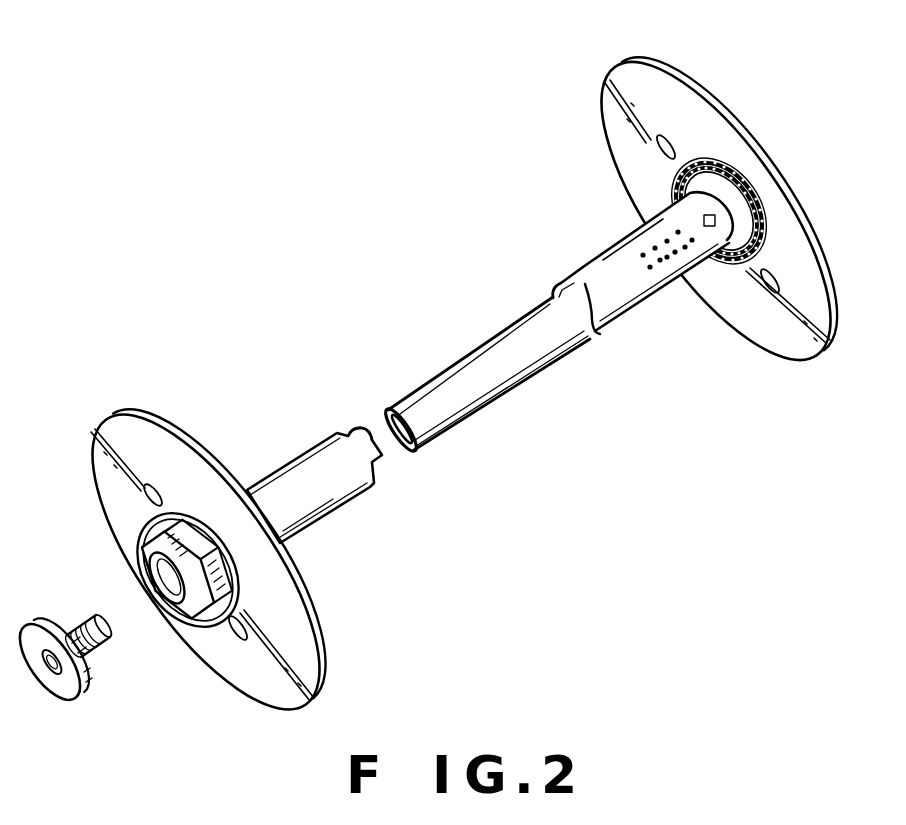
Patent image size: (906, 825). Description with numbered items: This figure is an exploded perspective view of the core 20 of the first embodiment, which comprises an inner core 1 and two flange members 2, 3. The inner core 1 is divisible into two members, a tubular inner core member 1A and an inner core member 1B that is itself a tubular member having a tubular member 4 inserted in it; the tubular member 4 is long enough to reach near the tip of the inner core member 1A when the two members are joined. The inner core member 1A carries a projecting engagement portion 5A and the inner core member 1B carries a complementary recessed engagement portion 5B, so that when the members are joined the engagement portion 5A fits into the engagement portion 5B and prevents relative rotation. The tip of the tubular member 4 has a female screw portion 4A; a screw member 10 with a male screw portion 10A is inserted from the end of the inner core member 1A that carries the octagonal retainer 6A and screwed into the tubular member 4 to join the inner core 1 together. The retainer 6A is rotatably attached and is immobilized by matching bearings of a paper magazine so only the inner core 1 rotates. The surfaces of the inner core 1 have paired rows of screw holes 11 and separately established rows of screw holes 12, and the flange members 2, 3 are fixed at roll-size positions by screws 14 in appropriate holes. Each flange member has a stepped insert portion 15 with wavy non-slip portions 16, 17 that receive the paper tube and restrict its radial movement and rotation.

The inner core 1 is at (490, 362).
The inner core member 1A is at (314, 466).
The inner core member 1B is at (649, 264).
The flange member 2 is at (140, 420).
The flange member 3 is at (626, 72).
The tubular member 4 is at (485, 394).
The female screw portion 4A is at (413, 452).
The engagement portion 5A is at (363, 433).
The engagement portion 5B is at (563, 282).
The retainer 6A is at (152, 516).
The screw member 10 is at (72, 692).
The male screw portion 10A is at (108, 652).
The screw holes 11 is at (667, 272).
The screw holes 12 is at (647, 237).
The screws 14 is at (750, 196).
The insert portion 15 is at (733, 178).
The non-slip portion 16 is at (714, 170).
The non-slip portion 17 is at (697, 165).
The core 20 is at (371, 212).